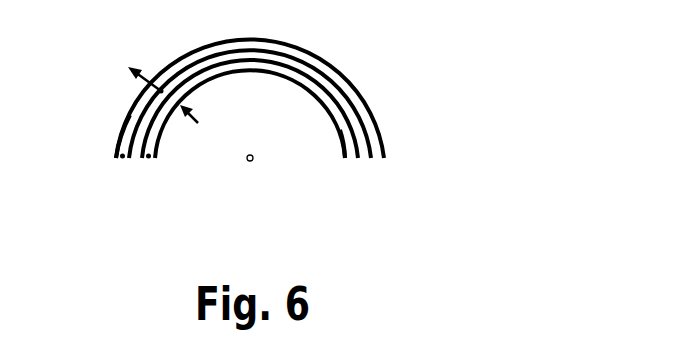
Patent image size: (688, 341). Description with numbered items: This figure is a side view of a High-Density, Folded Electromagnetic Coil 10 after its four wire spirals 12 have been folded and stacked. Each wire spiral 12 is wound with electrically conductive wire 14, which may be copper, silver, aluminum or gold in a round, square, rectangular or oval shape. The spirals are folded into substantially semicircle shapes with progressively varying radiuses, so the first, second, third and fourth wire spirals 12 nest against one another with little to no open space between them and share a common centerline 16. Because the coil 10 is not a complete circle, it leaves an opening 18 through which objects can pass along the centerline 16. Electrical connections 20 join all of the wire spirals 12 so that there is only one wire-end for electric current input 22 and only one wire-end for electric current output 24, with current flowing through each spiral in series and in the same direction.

The High-Density, Folded Electromagnetic Coil 10 is at (100, 67).
The wire spirals 12 is at (360, 75).
The wire 14 is at (127, 108).
The common centerline 16 is at (243, 158).
The opening 18 is at (293, 130).
The electrical connections 20 is at (150, 165).
The electric current input 22 is at (217, 124).
The electric current output 24 is at (176, 52).